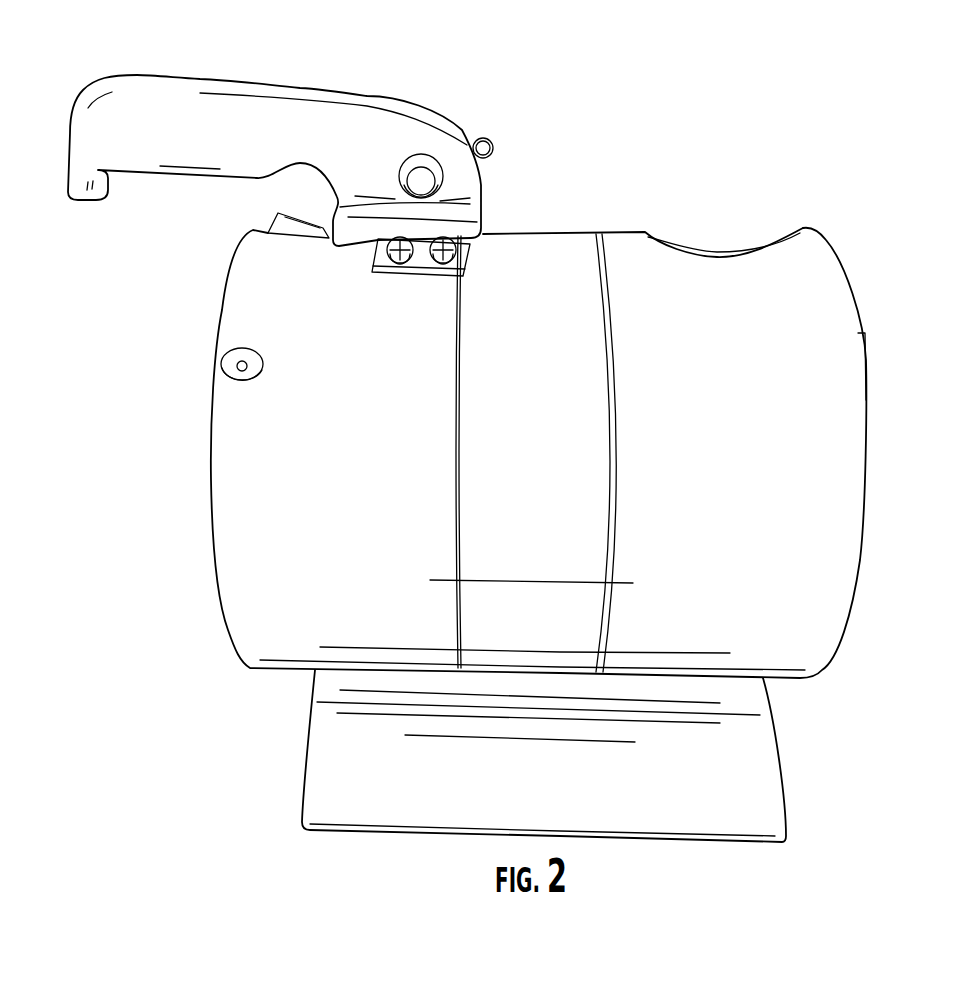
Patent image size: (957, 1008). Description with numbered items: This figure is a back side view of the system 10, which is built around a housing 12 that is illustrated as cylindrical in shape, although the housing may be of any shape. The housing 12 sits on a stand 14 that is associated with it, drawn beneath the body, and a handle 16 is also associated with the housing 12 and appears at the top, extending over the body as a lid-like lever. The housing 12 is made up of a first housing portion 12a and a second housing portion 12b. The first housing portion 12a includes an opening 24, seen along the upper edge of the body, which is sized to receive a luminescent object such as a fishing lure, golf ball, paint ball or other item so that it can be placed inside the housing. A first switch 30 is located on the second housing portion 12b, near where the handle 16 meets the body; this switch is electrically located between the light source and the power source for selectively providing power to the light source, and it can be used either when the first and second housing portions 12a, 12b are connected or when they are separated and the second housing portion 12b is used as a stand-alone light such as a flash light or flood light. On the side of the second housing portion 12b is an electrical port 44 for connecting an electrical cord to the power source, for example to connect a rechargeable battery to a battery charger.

The system 10 is at (526, 124).
The housing 12 is at (861, 290).
The first housing portion 12a is at (842, 443).
The second housing portion 12b is at (228, 308).
The stand 14 is at (760, 770).
The handle 16 is at (122, 90).
The opening 24 is at (727, 253).
The first switch 30 is at (273, 225).
The electrical port 44 is at (230, 363).